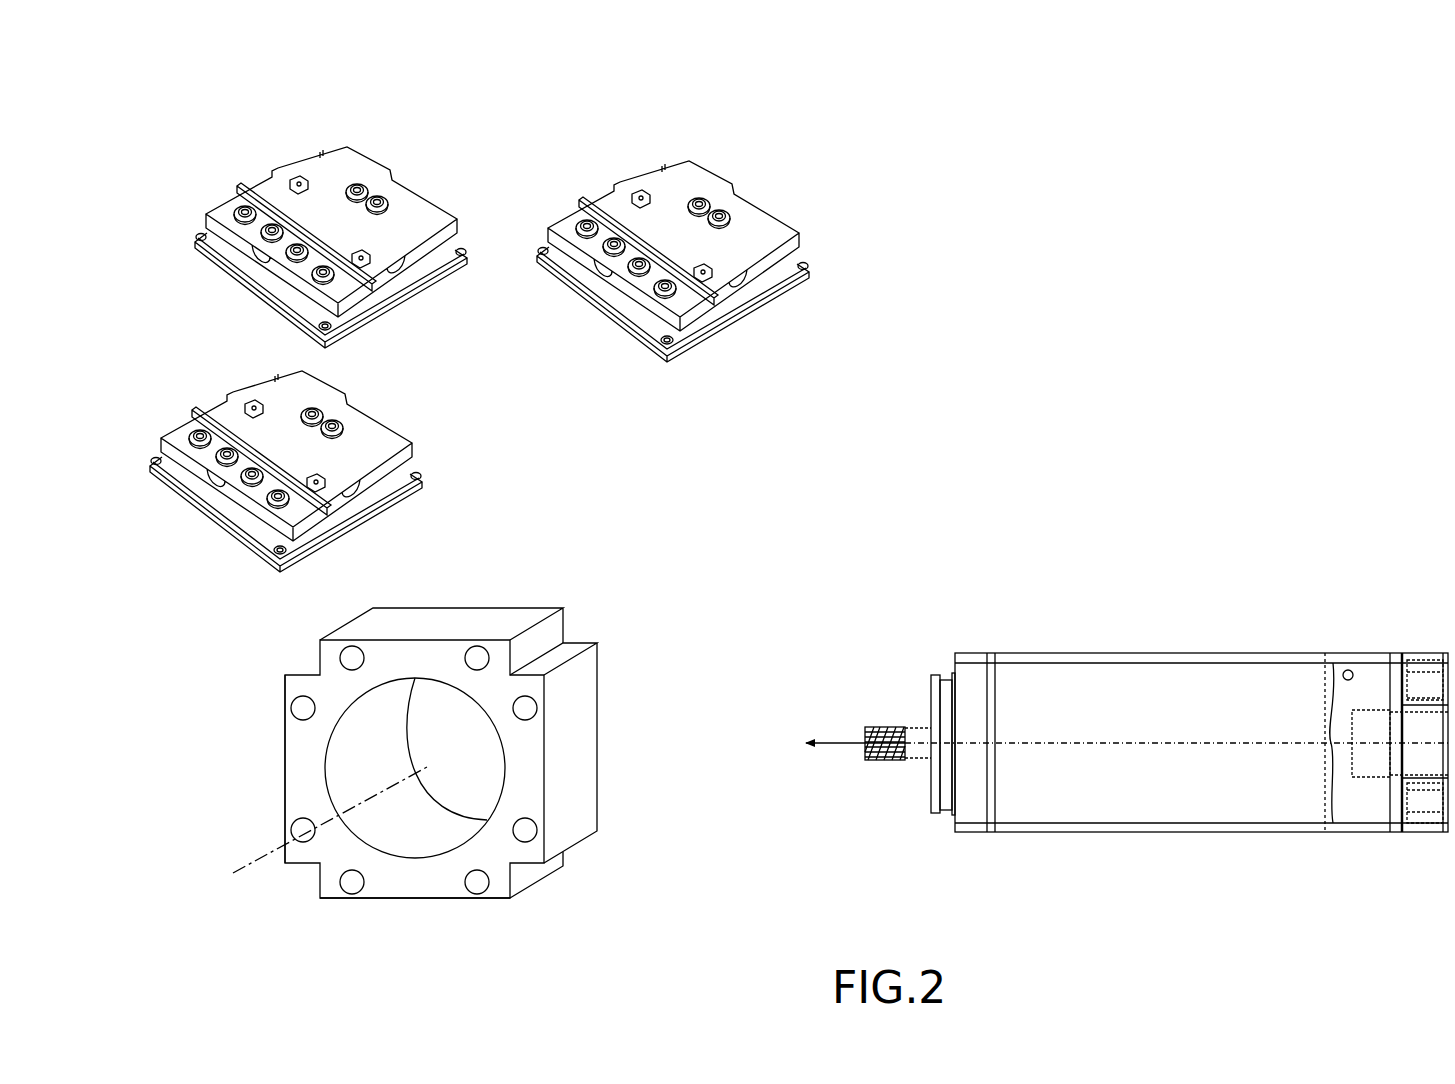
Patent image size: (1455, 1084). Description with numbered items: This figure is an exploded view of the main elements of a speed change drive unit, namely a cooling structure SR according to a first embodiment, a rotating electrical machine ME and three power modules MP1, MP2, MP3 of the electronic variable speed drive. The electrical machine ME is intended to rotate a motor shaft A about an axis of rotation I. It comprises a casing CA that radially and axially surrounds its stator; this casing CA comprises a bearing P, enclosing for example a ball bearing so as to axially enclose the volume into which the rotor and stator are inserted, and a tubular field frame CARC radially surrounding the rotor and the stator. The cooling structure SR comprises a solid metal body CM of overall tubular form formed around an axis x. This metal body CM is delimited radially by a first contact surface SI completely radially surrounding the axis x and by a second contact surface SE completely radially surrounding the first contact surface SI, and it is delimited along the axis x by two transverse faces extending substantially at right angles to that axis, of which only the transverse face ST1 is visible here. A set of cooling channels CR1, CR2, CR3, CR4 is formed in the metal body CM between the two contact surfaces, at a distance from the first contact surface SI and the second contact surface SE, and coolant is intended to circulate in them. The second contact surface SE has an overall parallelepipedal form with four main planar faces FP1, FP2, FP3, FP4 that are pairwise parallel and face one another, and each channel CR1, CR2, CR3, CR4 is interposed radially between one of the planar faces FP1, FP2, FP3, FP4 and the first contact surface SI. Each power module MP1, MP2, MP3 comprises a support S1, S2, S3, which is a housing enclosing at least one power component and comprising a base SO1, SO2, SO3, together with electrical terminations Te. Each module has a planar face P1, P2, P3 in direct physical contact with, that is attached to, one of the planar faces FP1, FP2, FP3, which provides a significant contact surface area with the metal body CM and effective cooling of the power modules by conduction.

The power module MP1 is at (209, 150).
The power module MP2 is at (613, 146).
The power module MP3 is at (159, 386).
The electrical terminations Te is at (366, 186).
The support S1 is at (230, 206).
The support S2 is at (568, 212).
The support S3 is at (178, 428).
The planar face of the module P1 is at (237, 284).
The planar face of the module P2 is at (617, 326).
The planar face of the module P3 is at (245, 545).
The base SO1 is at (368, 315).
The base SO2 is at (755, 305).
The base SO3 is at (395, 496).
The cooling structure SR is at (219, 690).
The solid metal body CM is at (288, 685).
The planar face FP1 is at (471, 624).
The planar face FP2 is at (586, 786).
The planar face FP3 is at (281, 818).
The planar face FP4 is at (467, 903).
The cooling channel CR1 is at (485, 650).
The cooling channel CR2 is at (540, 829).
The cooling channel CR3 is at (296, 714).
The cooling channel CR4 is at (354, 898).
The second contact surface SE is at (608, 677).
The first contact surface SI is at (357, 826).
The transverse face ST1 is at (420, 880).
The axis x is at (325, 836).
The rotating electrical machine ME is at (1094, 608).
The casing CA is at (1228, 857).
The tubular field frame CARC is at (1208, 652).
The bearing P is at (934, 672).
The motor shaft A is at (900, 763).
The axis of rotation I is at (855, 758).